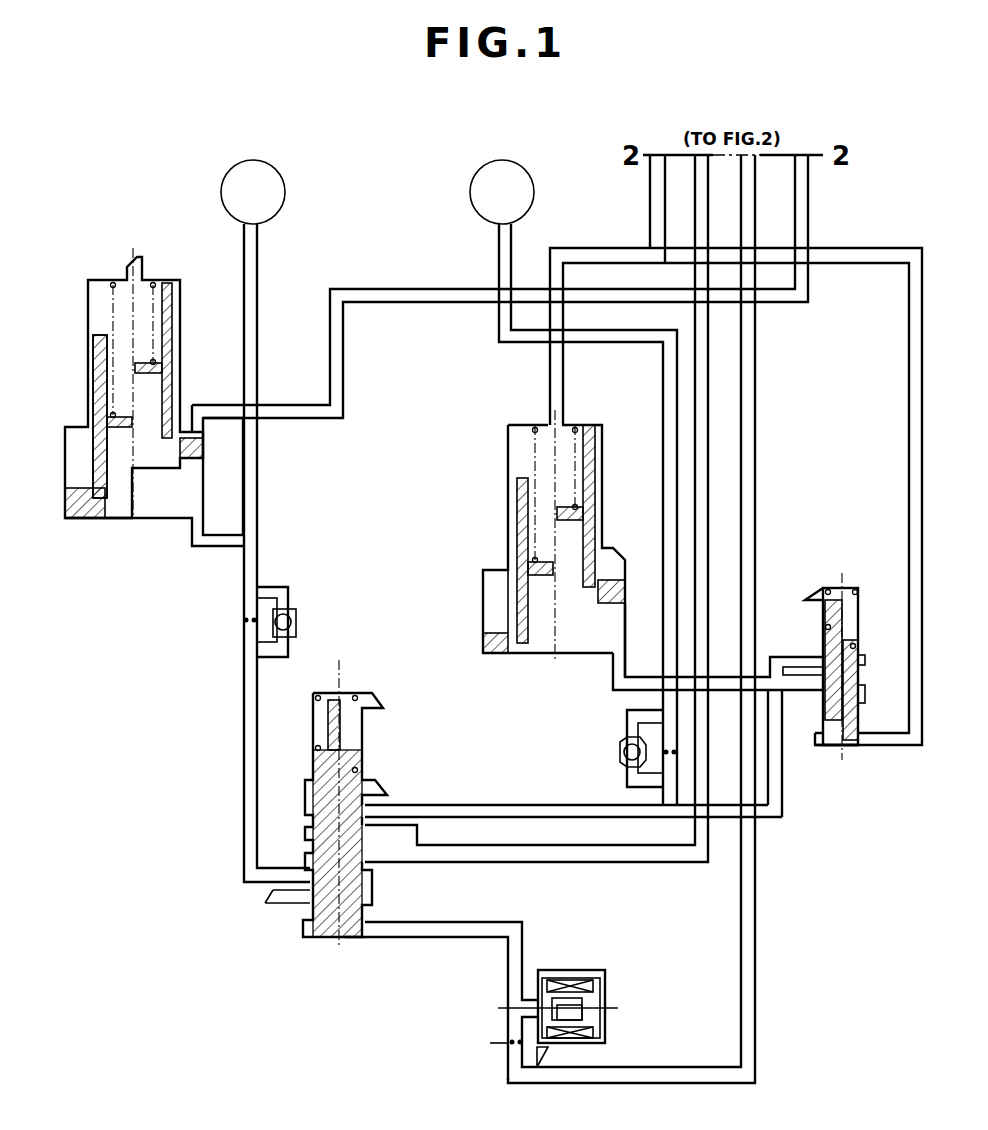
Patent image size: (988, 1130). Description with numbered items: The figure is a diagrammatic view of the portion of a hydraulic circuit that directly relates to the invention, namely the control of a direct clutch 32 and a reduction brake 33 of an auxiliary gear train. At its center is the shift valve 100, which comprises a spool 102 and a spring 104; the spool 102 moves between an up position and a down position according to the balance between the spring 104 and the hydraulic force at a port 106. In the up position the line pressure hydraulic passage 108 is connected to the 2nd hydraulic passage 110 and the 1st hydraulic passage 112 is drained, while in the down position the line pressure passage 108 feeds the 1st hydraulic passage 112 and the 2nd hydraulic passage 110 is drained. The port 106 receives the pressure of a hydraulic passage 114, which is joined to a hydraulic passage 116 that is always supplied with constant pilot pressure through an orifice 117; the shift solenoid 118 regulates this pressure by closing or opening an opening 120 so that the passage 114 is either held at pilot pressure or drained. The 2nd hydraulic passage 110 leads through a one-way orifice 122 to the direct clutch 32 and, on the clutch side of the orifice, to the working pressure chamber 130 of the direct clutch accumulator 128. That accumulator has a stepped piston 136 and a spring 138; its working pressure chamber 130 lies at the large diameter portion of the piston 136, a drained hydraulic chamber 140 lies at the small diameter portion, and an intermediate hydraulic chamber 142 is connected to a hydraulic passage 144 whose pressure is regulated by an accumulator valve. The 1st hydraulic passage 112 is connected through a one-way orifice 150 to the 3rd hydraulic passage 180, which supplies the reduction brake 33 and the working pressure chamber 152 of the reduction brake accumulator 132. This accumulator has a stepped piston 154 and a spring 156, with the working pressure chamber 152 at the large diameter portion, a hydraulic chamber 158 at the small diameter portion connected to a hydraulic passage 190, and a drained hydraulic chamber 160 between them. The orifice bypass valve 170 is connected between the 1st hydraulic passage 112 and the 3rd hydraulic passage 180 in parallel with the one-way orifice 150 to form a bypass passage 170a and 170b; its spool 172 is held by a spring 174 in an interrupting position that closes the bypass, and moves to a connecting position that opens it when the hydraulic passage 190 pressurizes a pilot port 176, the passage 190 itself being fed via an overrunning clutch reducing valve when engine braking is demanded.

The direct clutch 32 is at (286, 192).
The reduction brake 33 is at (470, 192).
The shift valve 100 is at (396, 718).
The spool 102 is at (357, 772).
The spring 104 is at (337, 693).
The port 106 is at (368, 935).
The line pressure hydraulic passage 108 is at (698, 178).
The 2nd hydraulic passage 110 is at (243, 838).
The 1st hydraulic passage 112 is at (558, 808).
The hydraulic passage 114 is at (460, 940).
The hydraulic passage 116 is at (760, 200).
The orifice 117 is at (490, 1043).
The shift solenoid 118 is at (598, 970).
The opening 120 is at (530, 998).
The one-way orifice 122 is at (236, 628).
The direct clutch accumulator 128 is at (72, 417).
The working pressure chamber 130 is at (168, 507).
The reduction brake accumulator 132 is at (502, 474).
The stepped piston 136 is at (97, 455).
The spring 138 is at (110, 305).
The hydraulic chamber 140 is at (103, 290).
The hydraulic chamber 142 is at (185, 430).
The hydraulic passage 144 is at (328, 372).
The one-way orifice 150 is at (613, 742).
The working pressure chamber 152 is at (572, 655).
The stepped piston 154 is at (518, 537).
The spring 156 is at (513, 418).
The hydraulic chamber 158 is at (565, 438).
The hydraulic chamber 160 is at (497, 597).
The orifice bypass valve 170 is at (848, 582).
The bypass passage 170a is at (785, 640).
The bypass passage 170b is at (795, 693).
The spool 172 is at (848, 697).
The spring 174 is at (815, 587).
The pilot port 176 is at (862, 742).
The 3rd hydraulic passage 180 is at (628, 343).
The hydraulic passage 190 is at (650, 222).